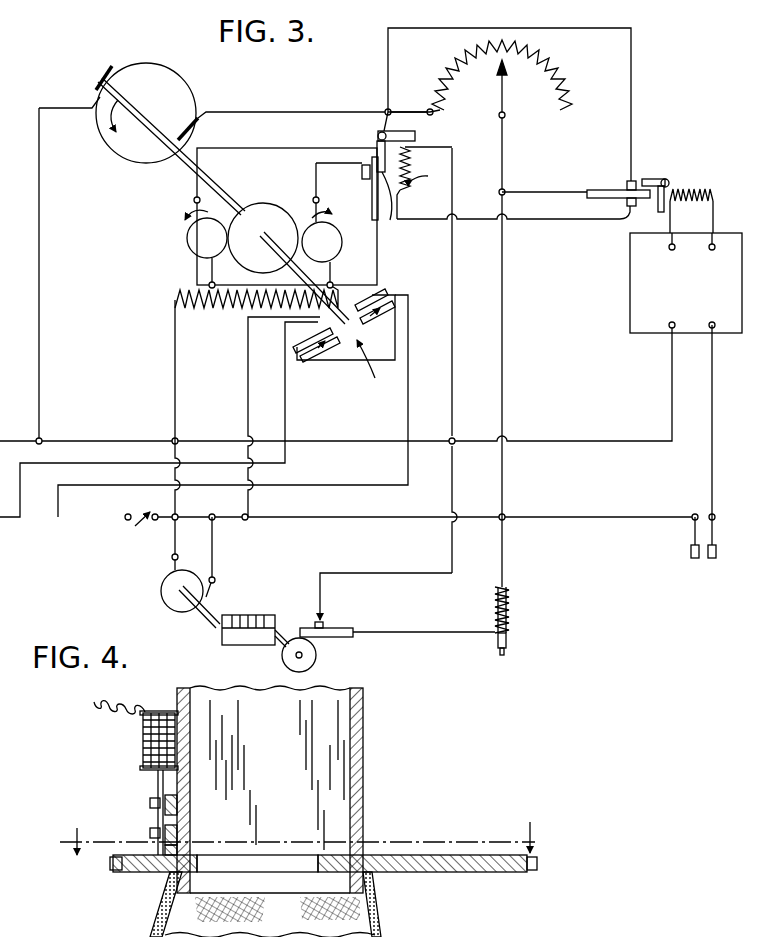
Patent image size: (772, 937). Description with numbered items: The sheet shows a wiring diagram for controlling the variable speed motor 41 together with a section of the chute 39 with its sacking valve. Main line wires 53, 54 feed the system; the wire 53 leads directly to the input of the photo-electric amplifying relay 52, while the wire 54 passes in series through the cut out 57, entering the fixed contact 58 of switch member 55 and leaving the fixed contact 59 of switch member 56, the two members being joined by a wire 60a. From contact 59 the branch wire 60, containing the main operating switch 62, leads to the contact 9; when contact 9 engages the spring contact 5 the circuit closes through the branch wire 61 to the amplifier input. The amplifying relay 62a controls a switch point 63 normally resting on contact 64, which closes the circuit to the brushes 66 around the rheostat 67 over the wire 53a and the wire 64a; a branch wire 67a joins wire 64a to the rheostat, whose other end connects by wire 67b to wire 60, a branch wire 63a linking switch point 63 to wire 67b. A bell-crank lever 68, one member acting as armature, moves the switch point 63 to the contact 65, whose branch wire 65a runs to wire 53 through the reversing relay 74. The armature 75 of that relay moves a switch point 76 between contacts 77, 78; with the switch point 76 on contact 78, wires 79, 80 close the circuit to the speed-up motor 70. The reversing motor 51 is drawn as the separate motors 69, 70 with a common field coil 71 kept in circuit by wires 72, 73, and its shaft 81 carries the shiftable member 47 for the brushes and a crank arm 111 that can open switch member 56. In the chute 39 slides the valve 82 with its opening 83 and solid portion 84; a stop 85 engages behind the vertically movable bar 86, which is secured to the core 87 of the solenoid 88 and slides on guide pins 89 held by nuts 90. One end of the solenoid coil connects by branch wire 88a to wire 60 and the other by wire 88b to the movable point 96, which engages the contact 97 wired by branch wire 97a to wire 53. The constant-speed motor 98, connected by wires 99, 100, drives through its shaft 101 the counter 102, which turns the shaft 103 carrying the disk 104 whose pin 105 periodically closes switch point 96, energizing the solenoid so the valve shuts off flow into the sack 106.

In FIG. 3, the spring contact 5 is at (718, 537).
In FIG. 4, the spring contact 5 is at (305, 836).
In FIG. 3, the contact 9 is at (690, 540).
In FIG. 4, the chute 39 is at (365, 718).
In FIG. 3, the variable speed motor 41 is at (162, 77).
In FIG. 3, the shiftable member 47 is at (121, 126).
In FIG. 3, the reversing motor 51 is at (263, 222).
In FIG. 3, the photo-electric amplifying relay 52 is at (648, 334).
In FIG. 3, the main line wire 53 is at (83, 440).
In FIG. 3, the wire 53a is at (40, 278).
In FIG. 3, the main line wire 54 is at (100, 463).
In FIG. 3, the switch member 55 is at (320, 349).
In FIG. 3, the switch member 56 is at (386, 298).
In FIG. 3, the cut out 57 is at (371, 367).
In FIG. 3, the fixed contact 58 is at (290, 344).
In FIG. 3, the fixed contact 59 is at (377, 321).
In FIG. 3, the branch wire 60 is at (409, 352).
In FIG. 3, the wire 60a is at (335, 361).
In FIG. 3, the branch wire 61 is at (714, 430).
In FIG. 3, the main operating switch 62 is at (130, 522).
In FIG. 3, the amplifying relay 62a is at (698, 190).
In FIG. 3, the switch point 63 is at (600, 191).
In FIG. 3, the branch wire 63a is at (542, 192).
In FIG. 3, the contact 64 is at (626, 180).
In FIG. 3, the wire 64a is at (652, 78).
In FIG. 3, the contact 65 is at (622, 221).
In FIG. 3, the branch wire 65a is at (453, 185).
In FIG. 3, the brushes 66 is at (111, 67).
In FIG. 3, the rheostat 67 is at (535, 58).
In FIG. 3, the branch wire 67a is at (408, 110).
In FIG. 3, the wire 67b is at (504, 318).
In FIG. 3, the bell-crank lever 68 is at (660, 176).
In FIG. 3, the reversing motor 69 is at (338, 236).
In FIG. 3, the speed-up motor 70 is at (187, 240).
In FIG. 3, the field coil 71 is at (213, 309).
In FIG. 3, the wire 72 is at (174, 370).
In FIG. 3, the wire 73 is at (247, 392).
In FIG. 3, the reversing relay 74 is at (424, 183).
In FIG. 3, the armature 75 is at (386, 130).
In FIG. 3, the switch point 76 is at (372, 202).
In FIG. 3, the contact 77 is at (361, 170).
In FIG. 3, the contact 78 is at (388, 198).
In FIG. 3, the wire 79 is at (194, 200).
In FIG. 3, the wire 80 is at (208, 284).
In FIG. 3, the shaft 81 is at (208, 180).
In FIG. 4, the valve 82 is at (397, 855).
In FIG. 4, the opening 83 is at (262, 855).
In FIG. 4, the solid portion 84 is at (435, 872).
In FIG. 4, the stop 85 is at (185, 858).
In FIG. 3, the vertically movable bar 86 is at (505, 652).
In FIG. 4, the vertically movable bar 86 is at (158, 787).
In FIG. 3, the core 87 is at (507, 635).
In FIG. 4, the core 87 is at (142, 728).
In FIG. 3, the solenoid 88 is at (511, 612).
In FIG. 4, the solenoid 88 is at (142, 755).
In FIG. 3, the branch wire 88a is at (504, 553).
In FIG. 3, the wire 88b is at (412, 631).
In FIG. 4, the guide pins 89 is at (150, 832).
In FIG. 4, the nuts 90 is at (150, 802).
In FIG. 3, the movable point 96 is at (335, 628).
In FIG. 3, the contact 97 is at (312, 620).
In FIG. 3, the branch wire 97a is at (452, 460).
In FIG. 3, the constant-speed motor 98 is at (161, 591).
In FIG. 3, the wire 99 is at (174, 548).
In FIG. 3, the wire 100 is at (213, 548).
In FIG. 3, the shaft 101 is at (205, 612).
In FIG. 3, the counter 102 is at (232, 637).
In FIG. 3, the shaft 103 is at (283, 628).
In FIG. 3, the disk 104 is at (313, 660).
In FIG. 3, the pin 105 is at (325, 636).
In FIG. 4, the sack 106 is at (165, 910).
In FIG. 3, the crank arm 111 is at (333, 283).